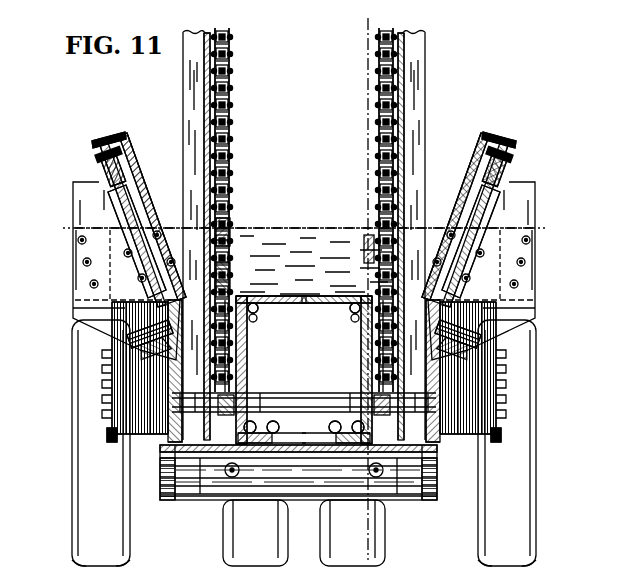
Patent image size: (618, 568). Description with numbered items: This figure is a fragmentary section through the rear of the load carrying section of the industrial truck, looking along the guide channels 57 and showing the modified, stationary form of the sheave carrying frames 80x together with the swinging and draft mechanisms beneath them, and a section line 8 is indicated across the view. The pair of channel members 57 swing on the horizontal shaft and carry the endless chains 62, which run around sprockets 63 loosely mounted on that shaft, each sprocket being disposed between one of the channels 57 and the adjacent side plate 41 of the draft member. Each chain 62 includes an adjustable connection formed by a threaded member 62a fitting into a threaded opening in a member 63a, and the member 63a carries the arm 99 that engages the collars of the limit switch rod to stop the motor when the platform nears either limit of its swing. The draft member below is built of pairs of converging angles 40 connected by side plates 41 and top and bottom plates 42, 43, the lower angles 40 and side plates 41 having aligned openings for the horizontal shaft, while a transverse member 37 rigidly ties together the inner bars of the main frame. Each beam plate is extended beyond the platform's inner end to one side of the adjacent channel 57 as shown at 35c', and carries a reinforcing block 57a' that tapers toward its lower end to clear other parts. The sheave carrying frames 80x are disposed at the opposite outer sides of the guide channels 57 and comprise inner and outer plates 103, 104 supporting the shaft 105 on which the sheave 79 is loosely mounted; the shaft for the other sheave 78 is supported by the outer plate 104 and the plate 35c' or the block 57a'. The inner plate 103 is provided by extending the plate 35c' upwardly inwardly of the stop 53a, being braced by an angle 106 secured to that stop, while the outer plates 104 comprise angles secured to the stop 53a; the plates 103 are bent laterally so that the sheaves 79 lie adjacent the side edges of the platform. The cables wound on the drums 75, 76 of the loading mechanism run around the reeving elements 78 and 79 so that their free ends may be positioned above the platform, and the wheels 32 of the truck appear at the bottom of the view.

The section line 8- 8 is at (360, 29).
The wheel 32 is at (128, 548).
The plate extension 35c' is at (304, 370).
The transverse member 37 is at (220, 490).
The converging angles 40 is at (340, 305).
The side plates 41 is at (358, 364).
The top plate 42 is at (322, 298).
The bottom plate 43 is at (298, 472).
The up-standing portion of angle 53a is at (318, 232).
The channel members 57 is at (183, 95).
The reinforcing block 57a' is at (303, 335).
The endless chains 62 is at (232, 178).
The threaded member 62a is at (230, 224).
The sprockets 63 is at (302, 466).
The chain member 63a is at (232, 276).
The drum 75 is at (112, 442).
The drum 76 is at (492, 434).
The reeving element 78 is at (140, 383).
The reeving element 79 is at (104, 164).
The sheave carrying frames 80x is at (304, 145).
The arm 99 is at (362, 268).
The inner plate 103 is at (130, 120).
The outer plate 104 is at (112, 240).
The shaft 105 is at (82, 204).
The angle 106 is at (150, 226).